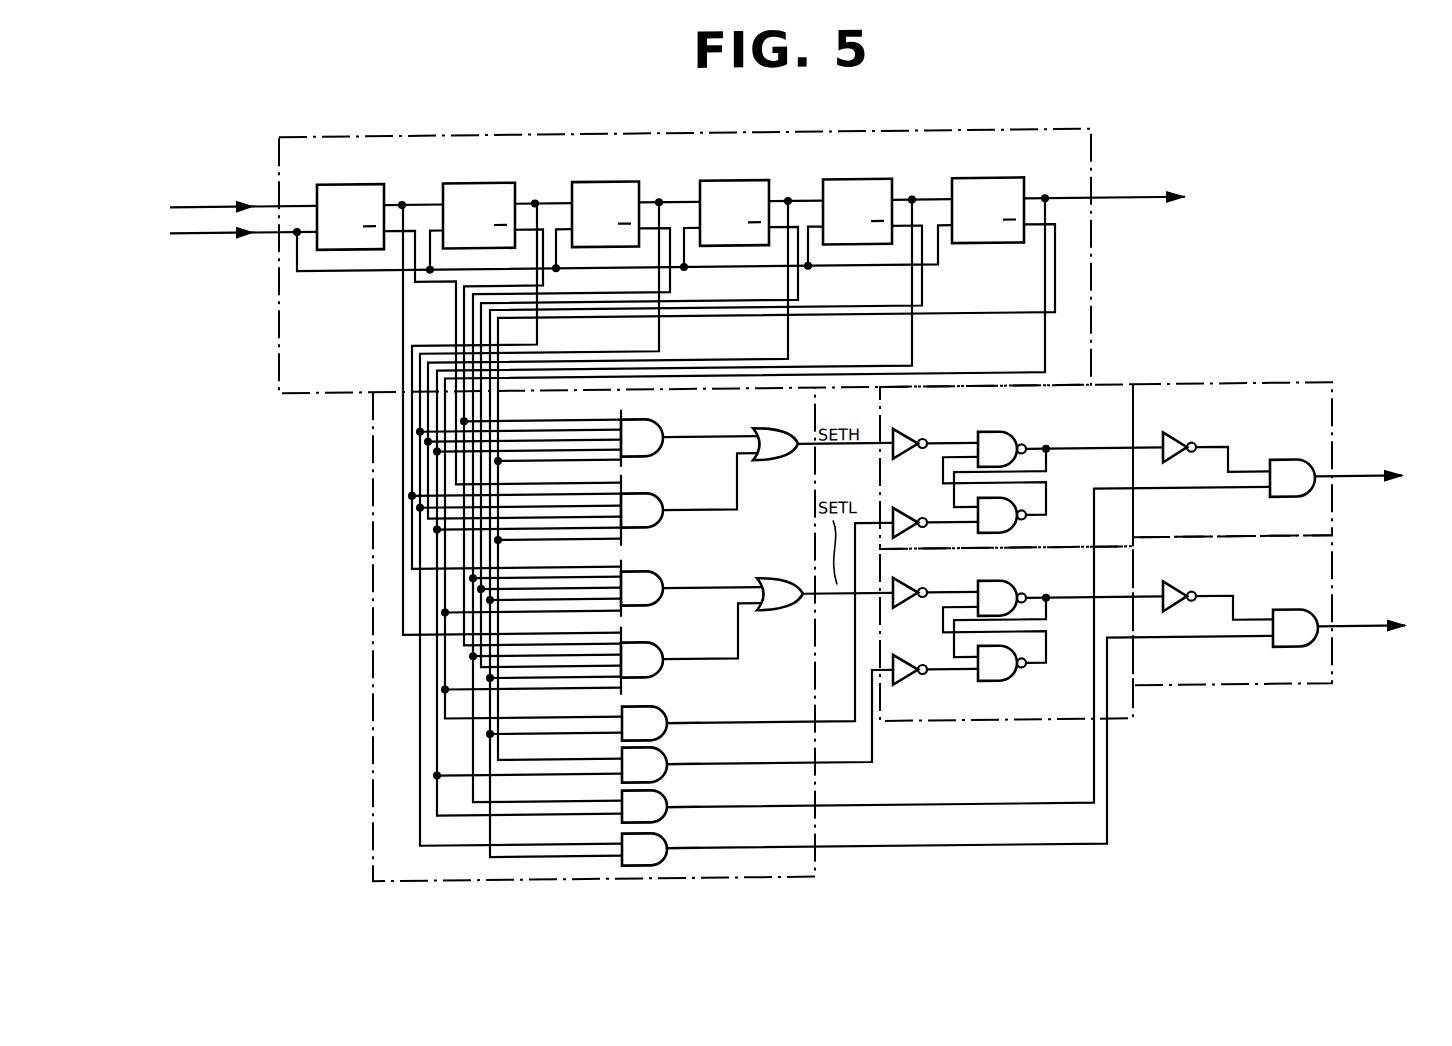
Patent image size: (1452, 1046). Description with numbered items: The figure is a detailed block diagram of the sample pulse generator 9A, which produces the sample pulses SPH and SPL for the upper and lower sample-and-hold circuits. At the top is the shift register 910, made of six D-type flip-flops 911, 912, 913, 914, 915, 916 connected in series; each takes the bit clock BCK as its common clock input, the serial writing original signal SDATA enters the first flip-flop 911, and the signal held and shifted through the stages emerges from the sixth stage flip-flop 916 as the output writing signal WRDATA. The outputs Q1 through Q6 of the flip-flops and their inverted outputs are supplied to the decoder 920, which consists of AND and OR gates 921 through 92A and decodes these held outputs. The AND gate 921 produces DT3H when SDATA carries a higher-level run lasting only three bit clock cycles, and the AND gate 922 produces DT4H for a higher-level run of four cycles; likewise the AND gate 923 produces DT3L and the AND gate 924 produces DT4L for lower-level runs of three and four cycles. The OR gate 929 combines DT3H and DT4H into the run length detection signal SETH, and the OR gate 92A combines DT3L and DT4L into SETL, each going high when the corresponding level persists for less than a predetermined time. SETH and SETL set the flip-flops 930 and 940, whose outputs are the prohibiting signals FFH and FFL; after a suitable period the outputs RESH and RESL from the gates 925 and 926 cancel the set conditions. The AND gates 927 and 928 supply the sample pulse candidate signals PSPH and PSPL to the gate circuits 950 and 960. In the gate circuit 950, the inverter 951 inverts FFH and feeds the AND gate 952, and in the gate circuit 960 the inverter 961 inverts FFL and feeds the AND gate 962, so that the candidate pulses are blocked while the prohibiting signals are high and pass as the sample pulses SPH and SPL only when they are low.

The shift register 910 is at (1093, 162).
The D-type flip-flop 911 is at (350, 185).
The D-type flip-flop 912 is at (477, 185).
The D-type flip-flop 913 is at (600, 185).
The D-type flip-flop 914 is at (737, 185).
The D-type flip-flop 915 is at (860, 185).
The D-type flip-flop 916 is at (997, 185).
The decoder 920 is at (371, 741).
The AND gate 921 is at (653, 450).
The AND gate 922 is at (653, 523).
The AND gate 923 is at (653, 601).
The AND gate 924 is at (653, 673).
The gate 925 is at (654, 736).
The gate 926 is at (654, 777).
The AND gate 927 is at (654, 819).
The AND gate 928 is at (654, 862).
The OR gate 929 is at (787, 457).
The OR gate 92A is at (780, 594).
The flip-flop 930 is at (1110, 393).
The flip-flop 940 is at (1122, 730).
The gate circuit 950 is at (1256, 393).
The inverter 951 is at (1176, 444).
The AND gate 952 is at (1302, 496).
The gate circuit 960 is at (1333, 573).
The inverter 961 is at (1176, 593).
The AND gate 962 is at (1305, 646).
The sample pulse generator 9A is at (918, 904).